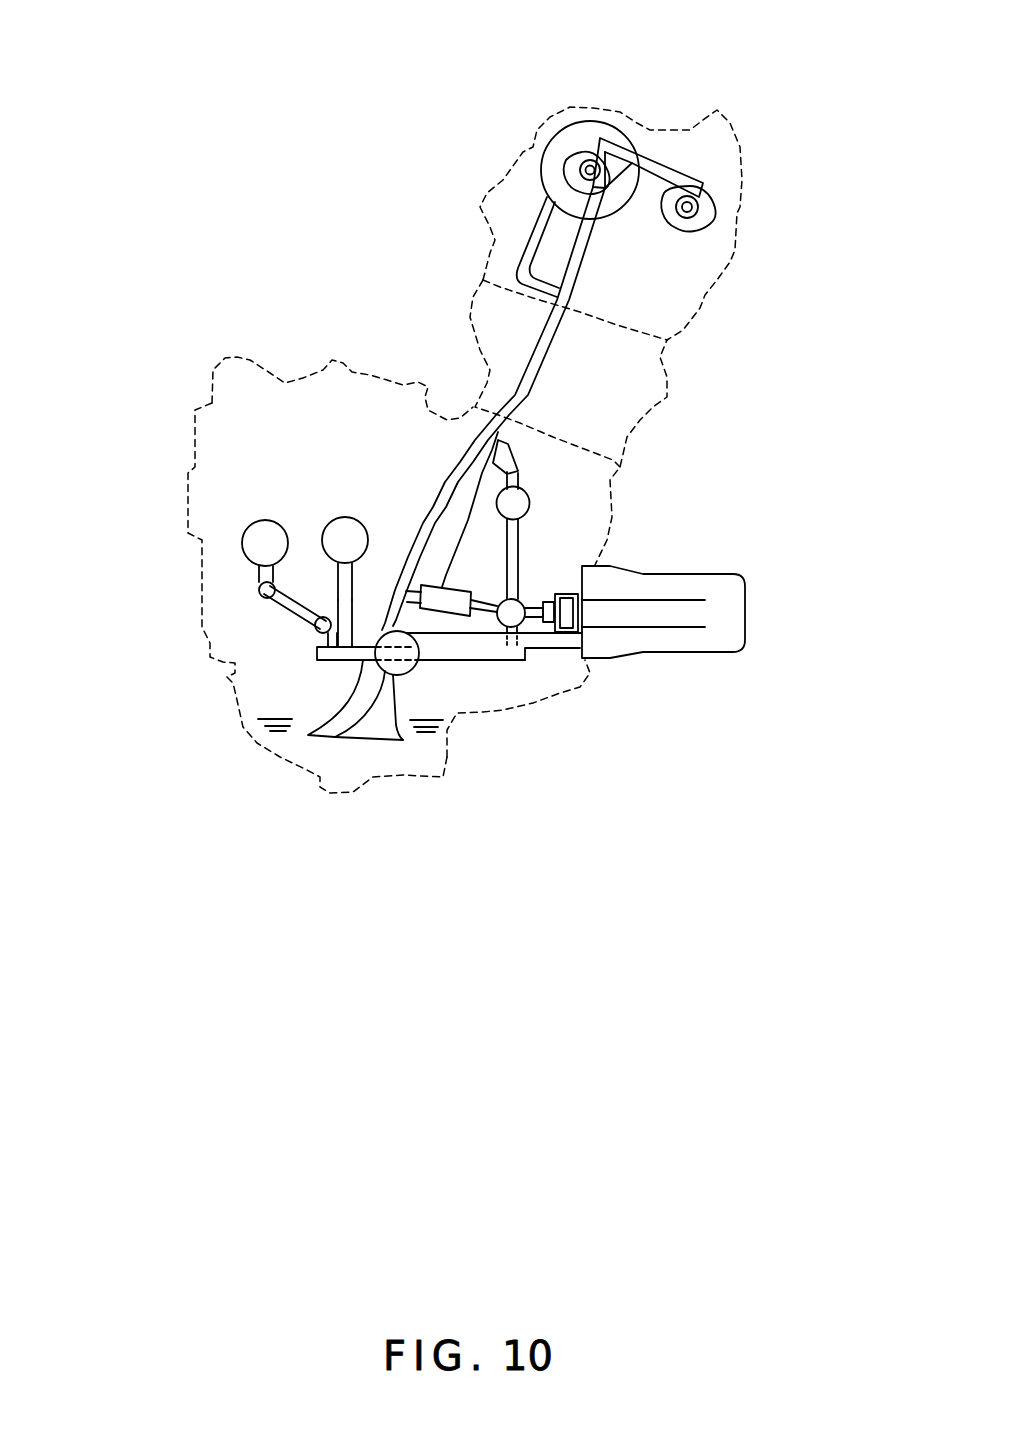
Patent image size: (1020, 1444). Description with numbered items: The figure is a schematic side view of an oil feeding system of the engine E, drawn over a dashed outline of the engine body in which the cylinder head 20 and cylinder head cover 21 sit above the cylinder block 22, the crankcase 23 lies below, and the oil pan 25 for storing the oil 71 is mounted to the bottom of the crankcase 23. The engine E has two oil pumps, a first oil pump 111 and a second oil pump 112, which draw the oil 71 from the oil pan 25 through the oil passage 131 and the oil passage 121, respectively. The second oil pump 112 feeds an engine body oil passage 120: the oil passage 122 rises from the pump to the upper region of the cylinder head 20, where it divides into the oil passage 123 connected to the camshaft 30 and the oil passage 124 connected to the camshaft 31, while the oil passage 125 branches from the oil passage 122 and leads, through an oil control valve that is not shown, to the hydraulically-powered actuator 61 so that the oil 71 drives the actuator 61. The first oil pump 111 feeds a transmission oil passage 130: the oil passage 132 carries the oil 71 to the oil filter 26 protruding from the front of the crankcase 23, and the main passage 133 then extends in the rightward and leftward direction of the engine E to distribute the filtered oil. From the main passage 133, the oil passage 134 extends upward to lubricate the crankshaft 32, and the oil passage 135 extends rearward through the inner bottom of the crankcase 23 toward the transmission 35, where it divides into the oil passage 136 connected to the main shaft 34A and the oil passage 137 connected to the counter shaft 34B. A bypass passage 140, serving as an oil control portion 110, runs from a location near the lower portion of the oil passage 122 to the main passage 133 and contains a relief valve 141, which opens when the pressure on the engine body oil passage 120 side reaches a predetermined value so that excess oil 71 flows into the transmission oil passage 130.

The engine E is at (456, 111).
The cylinder head 20 is at (735, 252).
The cylinder head cover 21 is at (740, 147).
The cylinder block 22 is at (690, 345).
The crankcase 23 is at (195, 448).
The oil pan 25 is at (447, 757).
The oil filter 26 is at (712, 652).
The camshaft 30 is at (583, 162).
The camshaft 31 is at (698, 203).
The crankshaft 32 is at (530, 497).
The main shaft 34A is at (340, 517).
The counter shaft 34B is at (257, 517).
The transmission 35 is at (259, 439).
The hydraulically-powered actuator 61 is at (547, 163).
The oil 71 is at (425, 762).
The oil control portion 110 is at (635, 470).
The first oil pump 111 is at (387, 677).
The second oil pump 112 is at (374, 666).
The engine body oil passage 120 is at (596, 270).
The oil passage 121 is at (323, 730).
The oil passage 122 is at (433, 510).
The oil passage 123 is at (608, 150).
The oil passage 124 is at (686, 178).
The oil passage 125 is at (522, 253).
The transmission oil passage 130 is at (581, 709).
The oil passage 131 is at (367, 740).
The oil passage 132 is at (560, 647).
The main passage 133 is at (523, 600).
The oil passage 134 is at (520, 543).
The oil passage 135 is at (490, 662).
The oil passage 136 is at (355, 598).
The oil passage 137 is at (290, 615).
The bypass passage 140 is at (512, 468).
The relief valve 141 is at (507, 463).